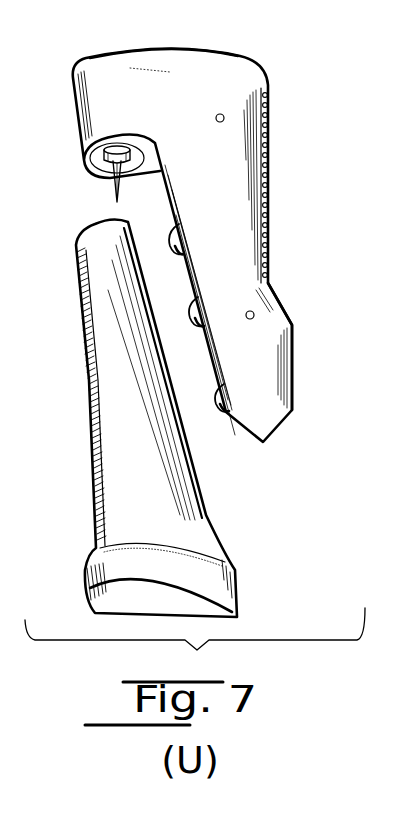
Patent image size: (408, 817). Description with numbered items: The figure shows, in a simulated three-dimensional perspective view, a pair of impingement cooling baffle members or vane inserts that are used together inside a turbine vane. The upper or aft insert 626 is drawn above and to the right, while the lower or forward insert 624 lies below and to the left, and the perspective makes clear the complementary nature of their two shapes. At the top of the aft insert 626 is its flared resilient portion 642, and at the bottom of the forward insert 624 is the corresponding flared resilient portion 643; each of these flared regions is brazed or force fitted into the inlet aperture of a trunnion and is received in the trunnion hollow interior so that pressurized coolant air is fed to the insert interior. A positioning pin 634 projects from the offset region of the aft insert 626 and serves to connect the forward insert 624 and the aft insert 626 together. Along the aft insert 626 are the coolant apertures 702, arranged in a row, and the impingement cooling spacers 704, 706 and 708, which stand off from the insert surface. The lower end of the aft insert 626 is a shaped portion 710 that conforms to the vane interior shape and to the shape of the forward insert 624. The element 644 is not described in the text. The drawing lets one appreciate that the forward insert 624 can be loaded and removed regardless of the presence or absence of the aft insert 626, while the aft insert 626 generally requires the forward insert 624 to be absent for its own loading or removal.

The flared resilient portion 642 is at (97, 46).
The upper aft insert 626 is at (233, 62).
The positioning pin 634 is at (108, 190).
The impingement cooling spacer 704 is at (167, 227).
The impingement cooling spacer 706 is at (197, 328).
The impingement cooling spacer 708 is at (222, 415).
The coolant apertures 702 is at (277, 143).
The shaped portion 710 is at (293, 308).
The lower forward insert 624 is at (90, 403).
The serrated edge 644 is at (92, 512).
The flared resilient portion 643 is at (85, 573).